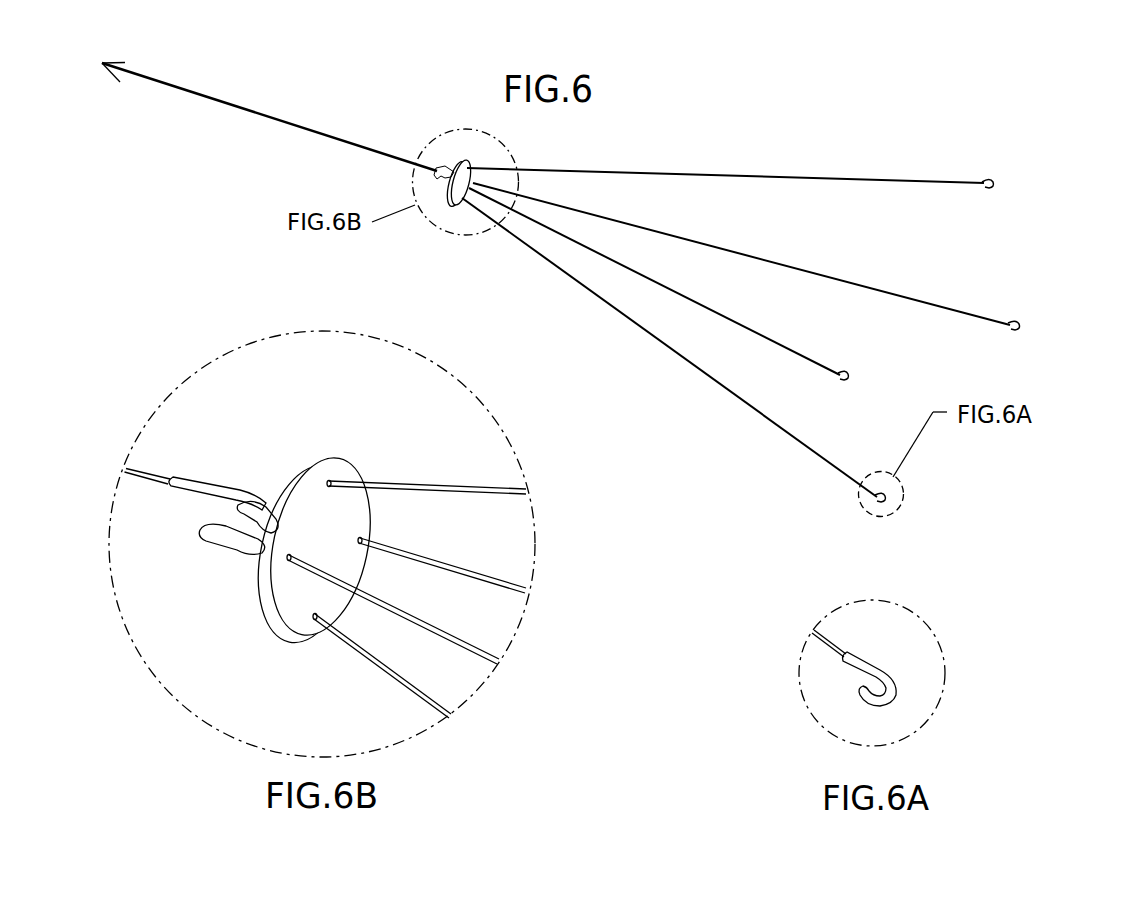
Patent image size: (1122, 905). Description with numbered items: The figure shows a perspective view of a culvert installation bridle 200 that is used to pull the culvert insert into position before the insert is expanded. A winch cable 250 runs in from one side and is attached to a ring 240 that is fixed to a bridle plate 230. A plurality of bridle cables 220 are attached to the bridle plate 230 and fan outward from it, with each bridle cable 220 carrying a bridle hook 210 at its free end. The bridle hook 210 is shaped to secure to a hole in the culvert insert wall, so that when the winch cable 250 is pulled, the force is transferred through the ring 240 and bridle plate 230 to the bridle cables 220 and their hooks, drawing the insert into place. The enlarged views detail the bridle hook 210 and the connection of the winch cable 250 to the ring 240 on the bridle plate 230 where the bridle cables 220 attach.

In FIG. 6, the culvert installation bridle 200 is at (698, 128).
In FIG. 6, the bridle hook 210 is at (995, 181).
In FIG. 6A, the bridle hook 210 is at (887, 671).
In FIG. 6, the bridle cables 220 is at (778, 177).
In FIG. 6B, the bridle cables 220 is at (413, 491).
In FIG. 6B, the bridle plate 230 is at (342, 472).
In FIG. 6B, the ring 240 is at (265, 562).
In FIG. 6, the winch cable 250 is at (278, 120).
In FIG. 6B, the winch cable 250 is at (187, 492).